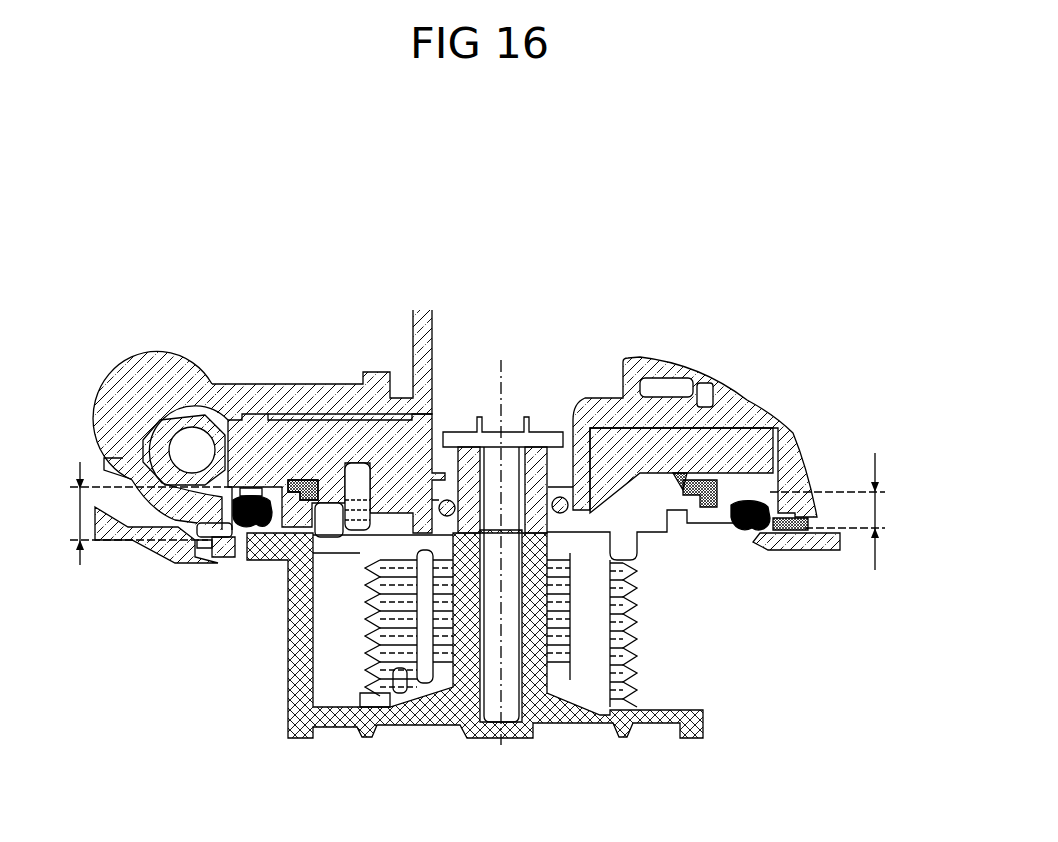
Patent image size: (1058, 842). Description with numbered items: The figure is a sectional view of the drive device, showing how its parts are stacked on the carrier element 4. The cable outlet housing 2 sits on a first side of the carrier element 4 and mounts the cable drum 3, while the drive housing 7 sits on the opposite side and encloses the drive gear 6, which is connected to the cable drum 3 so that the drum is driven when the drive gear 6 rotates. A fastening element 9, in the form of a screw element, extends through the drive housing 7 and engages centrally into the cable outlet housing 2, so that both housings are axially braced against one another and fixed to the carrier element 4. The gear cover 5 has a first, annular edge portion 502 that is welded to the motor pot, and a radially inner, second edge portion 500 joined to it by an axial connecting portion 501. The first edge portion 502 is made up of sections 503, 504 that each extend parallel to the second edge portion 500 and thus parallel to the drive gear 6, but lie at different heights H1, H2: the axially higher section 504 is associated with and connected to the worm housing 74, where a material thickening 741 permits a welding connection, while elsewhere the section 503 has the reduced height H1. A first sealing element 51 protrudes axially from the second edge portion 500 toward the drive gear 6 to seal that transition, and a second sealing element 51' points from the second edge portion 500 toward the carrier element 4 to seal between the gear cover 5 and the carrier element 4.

The cable outlet housing 2 is at (275, 688).
The cable drum 3 is at (625, 662).
The carrier element 4 is at (150, 530).
The gear cover 5 is at (217, 545).
The drive gear 6 is at (727, 453).
The drive housing 7 is at (312, 386).
The fastening element 9 is at (532, 430).
The first sealing element 51 is at (333, 410).
The second sealing element 51' is at (239, 415).
The worm housing 74 is at (128, 427).
The second edge portion 500 is at (270, 490).
The axial connecting portion 501 is at (233, 502).
The first edge portion 502 is at (817, 522).
The section of the first edge portion 503 is at (785, 532).
The axially higher section of the first edge portion 504 is at (214, 545).
The material thickening 741 is at (205, 537).
The height H1 is at (839, 511).
The height H2 is at (138, 513).